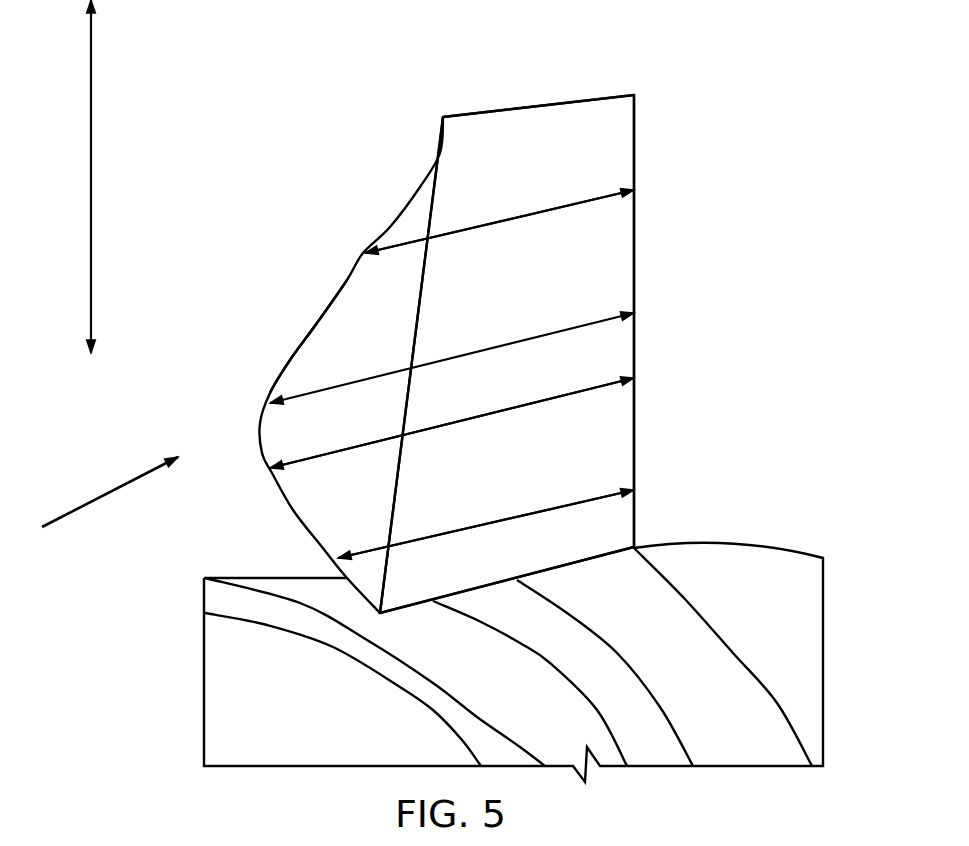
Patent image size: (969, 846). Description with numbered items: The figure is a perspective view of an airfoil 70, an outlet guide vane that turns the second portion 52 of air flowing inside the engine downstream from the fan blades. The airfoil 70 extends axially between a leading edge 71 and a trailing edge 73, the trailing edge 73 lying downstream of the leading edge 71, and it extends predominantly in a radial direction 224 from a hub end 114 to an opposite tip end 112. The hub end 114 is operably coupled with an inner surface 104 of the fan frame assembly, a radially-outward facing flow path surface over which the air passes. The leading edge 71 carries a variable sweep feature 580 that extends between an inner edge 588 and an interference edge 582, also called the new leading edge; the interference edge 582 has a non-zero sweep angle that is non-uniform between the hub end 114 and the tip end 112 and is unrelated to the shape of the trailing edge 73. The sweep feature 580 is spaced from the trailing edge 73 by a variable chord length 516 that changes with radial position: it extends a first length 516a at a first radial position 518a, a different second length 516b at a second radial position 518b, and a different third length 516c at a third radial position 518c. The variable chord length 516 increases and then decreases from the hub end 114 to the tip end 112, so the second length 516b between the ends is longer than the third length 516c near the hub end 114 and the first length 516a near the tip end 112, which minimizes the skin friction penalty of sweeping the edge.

The second portion of air 52 is at (128, 484).
The airfoil 70 is at (473, 70).
The leading edge 71 is at (418, 300).
The trailing edge 73 is at (635, 235).
The inner surface 104 is at (777, 568).
The tip end 112 is at (538, 105).
The hub end 114 is at (583, 560).
The radial direction 224 is at (92, 131).
The variable chord length 516 is at (490, 349).
The first length 516a is at (598, 195).
The second length 516b is at (596, 383).
The third length 516c is at (605, 496).
The first radial position 518a is at (635, 187).
The second radial position 518b is at (635, 380).
The third radial position 518c is at (635, 488).
The sweep feature 580 is at (250, 393).
The interference edge 582 is at (296, 348).
The inner edge 588 is at (414, 341).